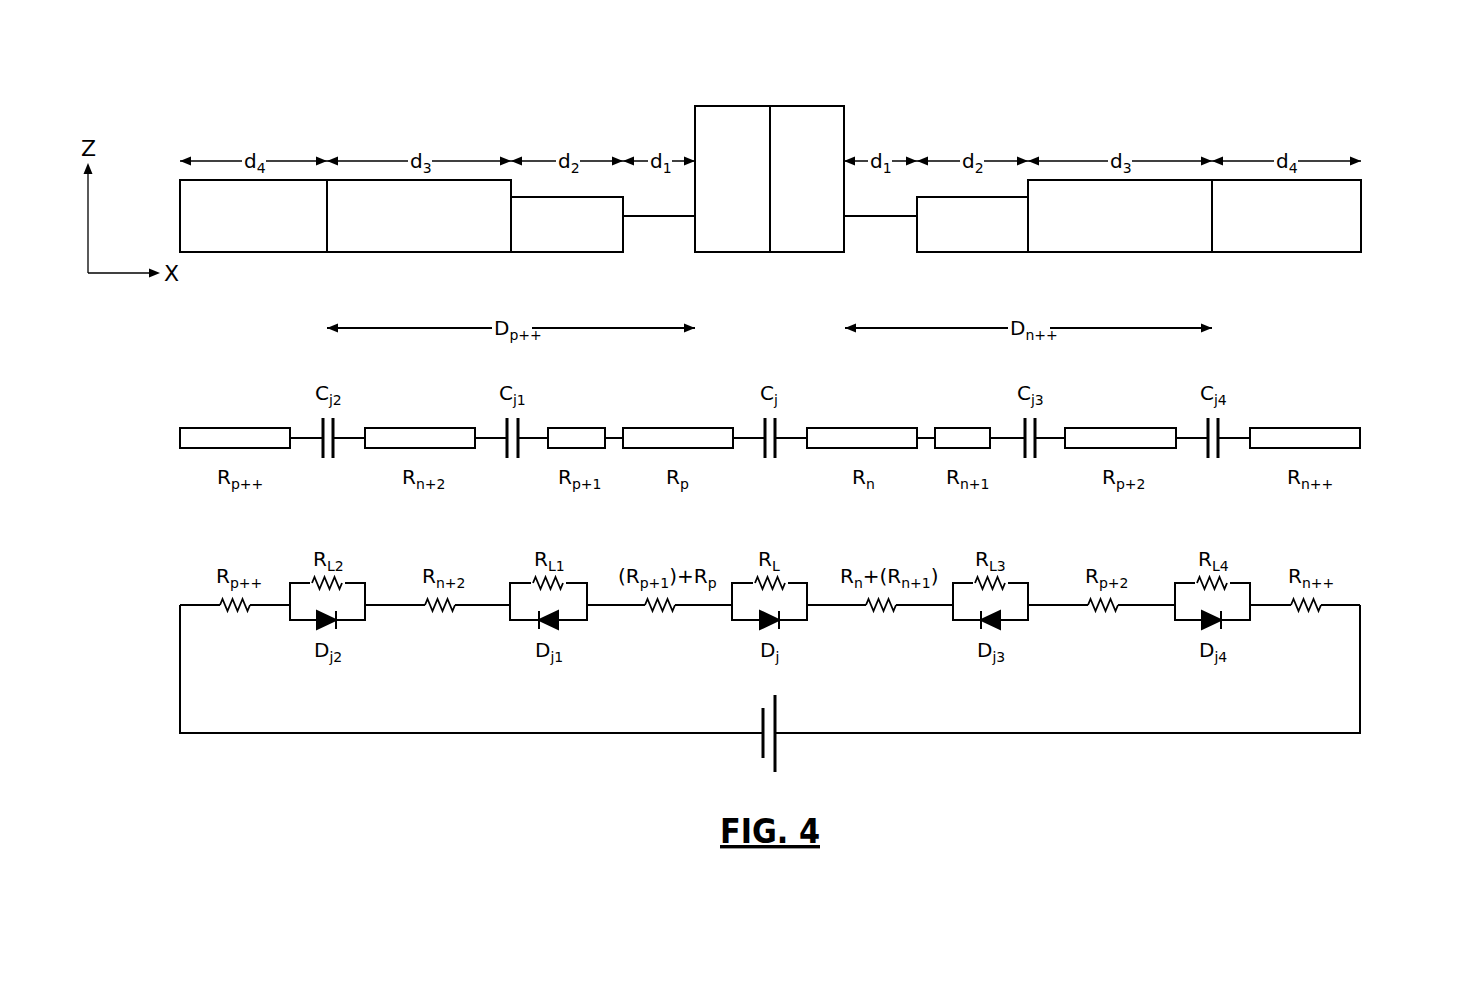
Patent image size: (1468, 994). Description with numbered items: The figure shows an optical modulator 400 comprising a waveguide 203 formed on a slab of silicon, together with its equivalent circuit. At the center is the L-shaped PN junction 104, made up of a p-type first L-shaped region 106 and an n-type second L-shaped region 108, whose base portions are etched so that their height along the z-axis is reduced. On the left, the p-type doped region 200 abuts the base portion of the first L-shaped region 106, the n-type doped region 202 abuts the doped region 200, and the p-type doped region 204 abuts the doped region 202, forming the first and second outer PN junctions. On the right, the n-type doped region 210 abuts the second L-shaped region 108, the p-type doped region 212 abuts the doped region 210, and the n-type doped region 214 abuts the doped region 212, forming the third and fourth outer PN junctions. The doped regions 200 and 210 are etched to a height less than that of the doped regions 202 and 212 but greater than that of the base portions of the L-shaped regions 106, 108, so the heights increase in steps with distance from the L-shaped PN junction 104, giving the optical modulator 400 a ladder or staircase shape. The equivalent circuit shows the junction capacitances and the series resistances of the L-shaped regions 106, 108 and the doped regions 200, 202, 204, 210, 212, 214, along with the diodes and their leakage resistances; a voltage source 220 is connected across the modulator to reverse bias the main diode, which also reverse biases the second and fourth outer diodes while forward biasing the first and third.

The optical modulator 400 is at (1034, 66).
The L-shaped PN junction 104 is at (780, 93).
The first L-shaped region 106 is at (695, 132).
The second L-shaped region 108 is at (844, 132).
The waveguide 203 is at (1384, 215).
The doped region 204 is at (253, 256).
The doped region 202 is at (420, 256).
The doped region 200 is at (568, 256).
The doped region 210 is at (972, 257).
The doped region 212 is at (1120, 255).
The doped region 214 is at (1285, 255).
The voltage source 220 is at (760, 748).